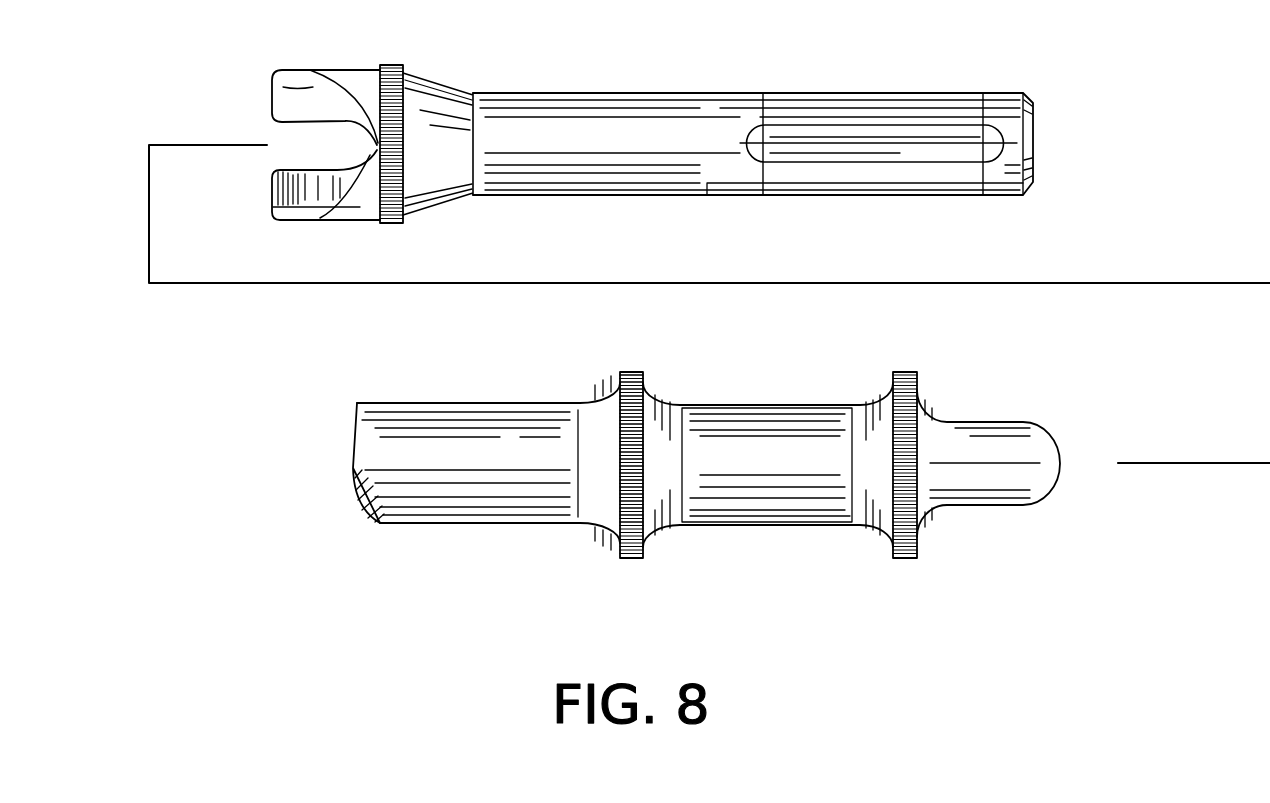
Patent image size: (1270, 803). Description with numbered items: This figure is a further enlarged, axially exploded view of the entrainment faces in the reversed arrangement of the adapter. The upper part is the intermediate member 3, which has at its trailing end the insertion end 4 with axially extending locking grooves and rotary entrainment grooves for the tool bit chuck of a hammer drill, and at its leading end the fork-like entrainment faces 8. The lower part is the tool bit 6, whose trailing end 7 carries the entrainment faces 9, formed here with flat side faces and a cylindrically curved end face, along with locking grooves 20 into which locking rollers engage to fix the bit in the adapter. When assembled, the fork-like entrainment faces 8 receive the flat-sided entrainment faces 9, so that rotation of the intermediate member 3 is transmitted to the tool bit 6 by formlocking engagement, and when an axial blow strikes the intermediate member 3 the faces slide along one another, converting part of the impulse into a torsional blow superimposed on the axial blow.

The intermediate member 3 is at (568, 92).
The insertion end 4 is at (900, 97).
The entrainment faces 8 is at (297, 160).
The locking grooves 20 is at (745, 405).
The tool bit 6 is at (452, 513).
The trailing end 7 is at (753, 525).
The entrainment faces 9 is at (997, 507).